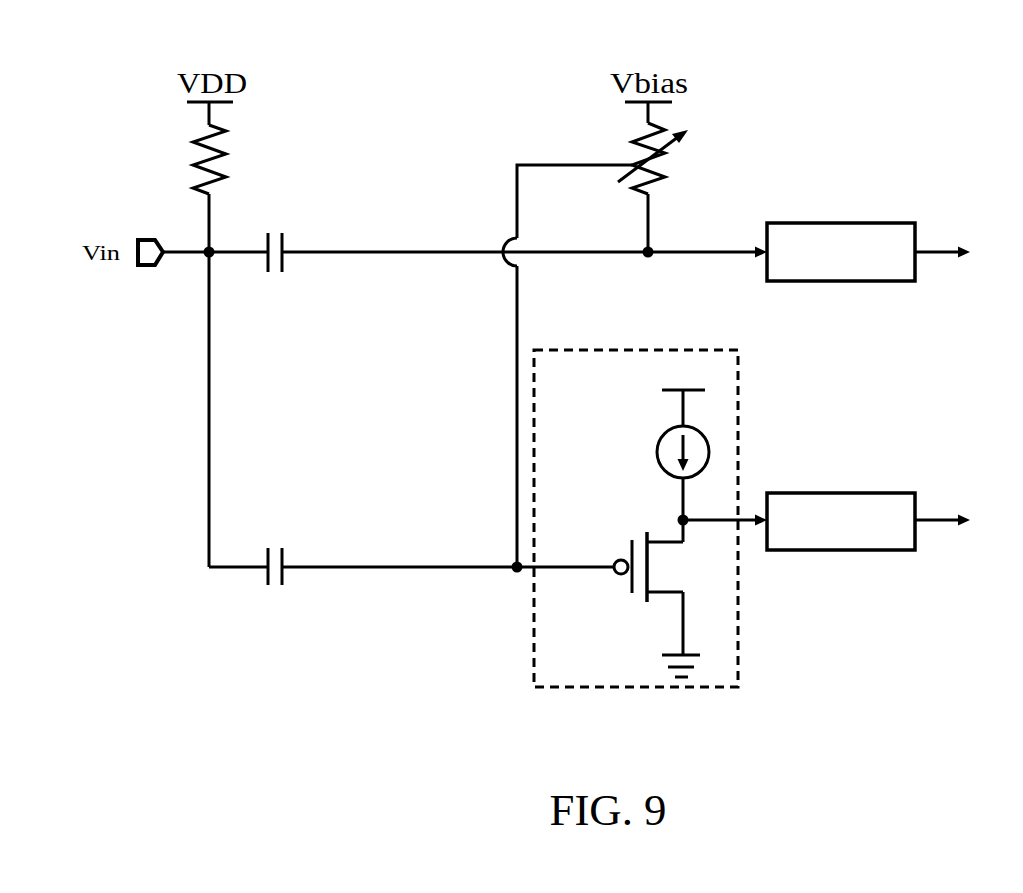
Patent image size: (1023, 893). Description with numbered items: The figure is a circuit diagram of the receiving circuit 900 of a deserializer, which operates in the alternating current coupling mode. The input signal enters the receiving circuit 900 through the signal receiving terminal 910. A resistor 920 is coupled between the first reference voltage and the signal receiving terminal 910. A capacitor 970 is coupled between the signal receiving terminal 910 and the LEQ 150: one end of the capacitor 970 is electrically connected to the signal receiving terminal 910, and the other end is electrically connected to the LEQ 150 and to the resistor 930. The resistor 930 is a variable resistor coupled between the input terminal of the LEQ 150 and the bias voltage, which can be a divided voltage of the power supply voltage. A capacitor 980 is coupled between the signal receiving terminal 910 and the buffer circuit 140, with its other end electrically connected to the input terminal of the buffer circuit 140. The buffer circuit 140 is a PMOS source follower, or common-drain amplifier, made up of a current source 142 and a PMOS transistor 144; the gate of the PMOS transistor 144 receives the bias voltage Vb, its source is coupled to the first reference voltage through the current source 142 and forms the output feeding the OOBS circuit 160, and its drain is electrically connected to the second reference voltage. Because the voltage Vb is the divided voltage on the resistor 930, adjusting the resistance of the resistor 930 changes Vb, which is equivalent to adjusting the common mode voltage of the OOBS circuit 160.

The receiving circuit 900 is at (35, 145).
The signal receiving terminal 910 is at (207, 258).
The resistor 920 is at (195, 137).
The resistor 930 is at (630, 137).
The capacitor 970 is at (294, 225).
The capacitor 980 is at (294, 535).
The buffer circuit 140 is at (585, 350).
The current source 142 is at (657, 448).
The PMOS transistor 144 is at (622, 609).
The LEQ 150 is at (868, 223).
The OOBS circuit 160 is at (868, 492).